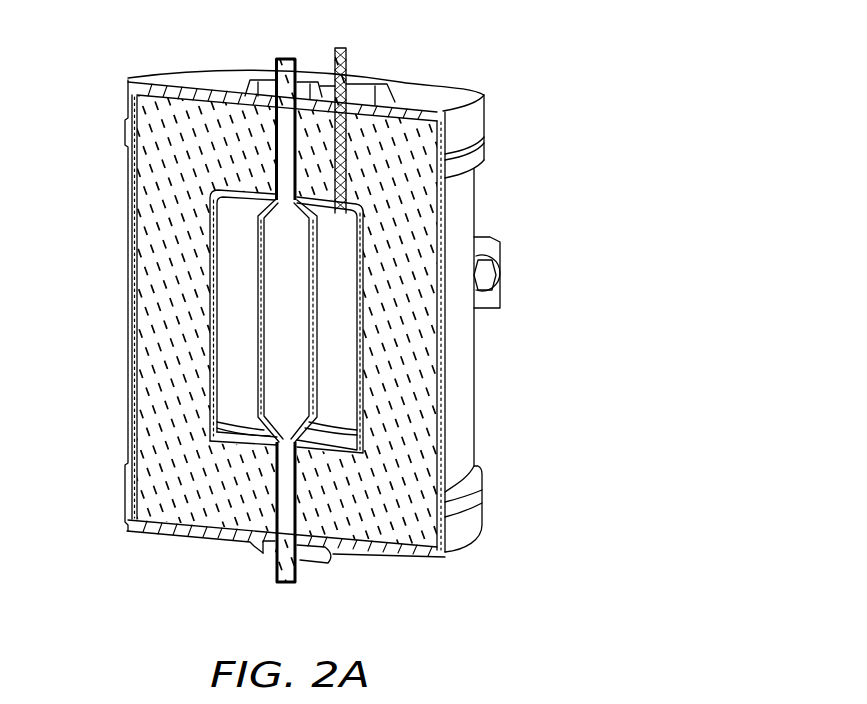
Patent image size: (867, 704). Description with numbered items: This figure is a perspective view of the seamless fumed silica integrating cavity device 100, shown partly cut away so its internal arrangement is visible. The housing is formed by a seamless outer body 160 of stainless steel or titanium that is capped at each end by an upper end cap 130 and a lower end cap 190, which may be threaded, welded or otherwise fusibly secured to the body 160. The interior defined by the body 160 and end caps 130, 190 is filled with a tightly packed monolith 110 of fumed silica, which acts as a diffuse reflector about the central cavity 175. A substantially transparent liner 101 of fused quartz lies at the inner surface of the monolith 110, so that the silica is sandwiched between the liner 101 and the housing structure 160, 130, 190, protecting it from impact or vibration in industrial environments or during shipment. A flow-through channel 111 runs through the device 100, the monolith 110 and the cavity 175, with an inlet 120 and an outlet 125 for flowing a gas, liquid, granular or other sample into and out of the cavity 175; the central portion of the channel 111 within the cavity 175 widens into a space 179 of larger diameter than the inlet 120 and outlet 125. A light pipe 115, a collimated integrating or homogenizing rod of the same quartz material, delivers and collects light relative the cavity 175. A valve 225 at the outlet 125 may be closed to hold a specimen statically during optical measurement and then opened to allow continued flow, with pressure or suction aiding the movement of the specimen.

The seamless fumed silica integrating cavity device 100 is at (118, 36).
The fumed silica monolith 110 is at (402, 511).
The flow-through channel 111 is at (272, 92).
The light pipe 115 is at (346, 50).
The inlet 120 is at (287, 68).
The outlet 125 is at (296, 578).
The upper end cap 130 is at (485, 121).
The transparent liner 101 is at (367, 248).
The outer body 160 is at (476, 360).
The cavity 175 is at (352, 405).
The space 179 is at (282, 313).
The lower end cap 190 is at (482, 518).
The valve 225 is at (280, 441).